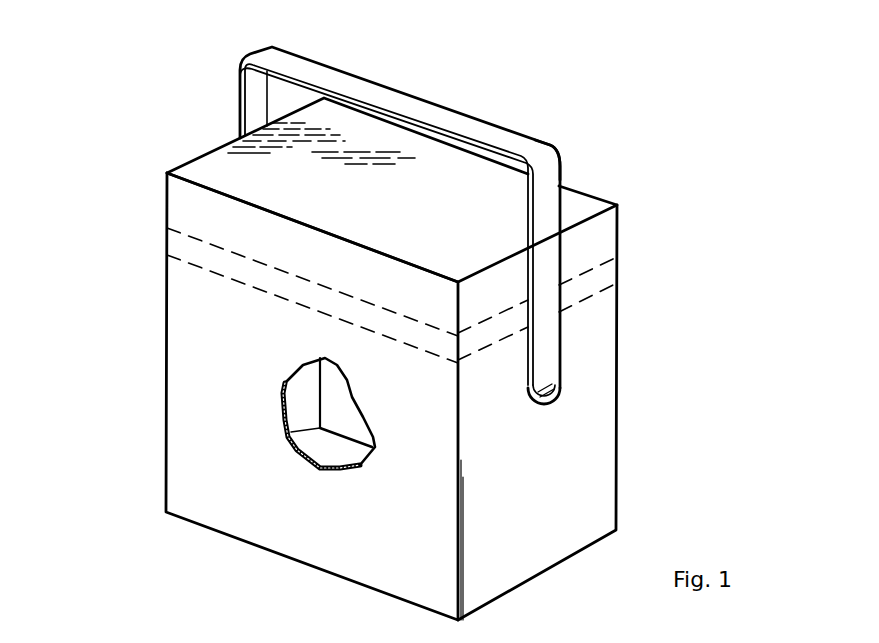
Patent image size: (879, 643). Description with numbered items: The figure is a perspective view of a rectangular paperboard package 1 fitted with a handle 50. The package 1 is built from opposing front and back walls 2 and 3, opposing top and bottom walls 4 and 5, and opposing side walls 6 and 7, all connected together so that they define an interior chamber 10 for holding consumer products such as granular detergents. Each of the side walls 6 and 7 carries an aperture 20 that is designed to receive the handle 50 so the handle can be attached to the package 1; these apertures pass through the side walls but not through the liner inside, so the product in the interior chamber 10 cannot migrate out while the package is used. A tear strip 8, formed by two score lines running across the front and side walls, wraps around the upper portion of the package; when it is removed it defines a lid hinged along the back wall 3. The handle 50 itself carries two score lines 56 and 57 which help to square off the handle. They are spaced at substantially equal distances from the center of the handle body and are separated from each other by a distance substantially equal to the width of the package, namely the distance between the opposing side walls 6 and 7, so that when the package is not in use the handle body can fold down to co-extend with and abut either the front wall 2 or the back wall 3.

The rectangular paperboard package 1 is at (140, 349).
The front wall 2 is at (247, 527).
The back wall 3 is at (337, 410).
The top wall 4 is at (215, 172).
The bottom wall 5 is at (336, 447).
The side wall 6 is at (598, 467).
The side wall 7 is at (310, 395).
The tear strip 8 is at (287, 296).
The interior chamber 10 is at (300, 436).
The aperture 20 is at (563, 380).
The handle 50 is at (545, 202).
The score line 56 is at (253, 57).
The score line 57 is at (543, 158).